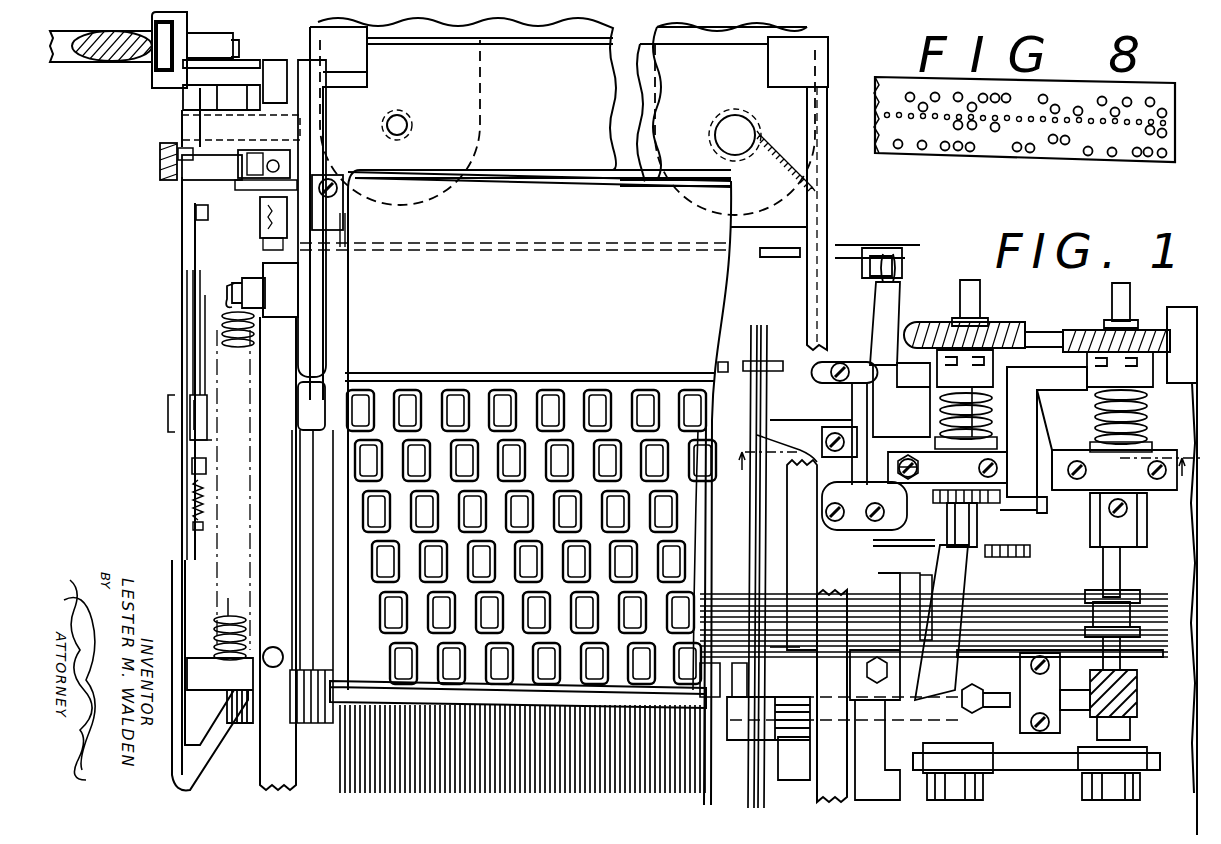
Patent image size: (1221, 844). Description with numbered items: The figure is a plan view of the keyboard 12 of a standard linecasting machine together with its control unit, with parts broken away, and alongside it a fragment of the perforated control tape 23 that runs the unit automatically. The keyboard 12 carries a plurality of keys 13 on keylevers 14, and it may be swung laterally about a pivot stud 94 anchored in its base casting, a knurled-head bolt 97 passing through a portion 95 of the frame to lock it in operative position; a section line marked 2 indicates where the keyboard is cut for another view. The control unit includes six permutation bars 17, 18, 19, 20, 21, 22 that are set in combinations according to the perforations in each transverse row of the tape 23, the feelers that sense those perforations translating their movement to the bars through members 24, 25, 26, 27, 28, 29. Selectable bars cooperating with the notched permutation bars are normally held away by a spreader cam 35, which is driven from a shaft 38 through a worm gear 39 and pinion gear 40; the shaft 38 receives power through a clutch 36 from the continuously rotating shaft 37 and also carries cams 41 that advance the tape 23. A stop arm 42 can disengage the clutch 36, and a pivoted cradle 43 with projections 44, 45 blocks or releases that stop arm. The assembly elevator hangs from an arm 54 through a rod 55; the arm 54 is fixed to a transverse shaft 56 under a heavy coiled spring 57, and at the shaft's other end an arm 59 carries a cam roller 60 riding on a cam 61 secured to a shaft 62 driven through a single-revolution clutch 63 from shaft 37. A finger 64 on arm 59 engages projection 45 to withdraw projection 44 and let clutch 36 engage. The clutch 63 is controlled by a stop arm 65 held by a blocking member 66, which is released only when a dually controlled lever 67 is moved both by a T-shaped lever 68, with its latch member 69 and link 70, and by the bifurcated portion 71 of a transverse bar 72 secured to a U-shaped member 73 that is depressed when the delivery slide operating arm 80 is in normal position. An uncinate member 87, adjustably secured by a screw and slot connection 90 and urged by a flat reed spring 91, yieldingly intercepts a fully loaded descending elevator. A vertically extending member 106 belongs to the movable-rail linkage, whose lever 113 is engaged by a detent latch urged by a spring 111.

In FIG. 1, the section line 2- 2 is at (733, 90).
In FIG. 1, the keyboard 12 is at (371, 669).
In FIG. 1, the keys 13 is at (502, 405).
In FIG. 1, the keylevers 14 is at (962, 451).
In FIG. 1, the permutation bar 17 is at (732, 600).
In FIG. 1, the permutation bar 18 is at (745, 575).
In FIG. 1, the permutation bar 19 is at (768, 600).
In FIG. 1, the permutation bar 20 is at (790, 605).
In FIG. 1, the permutation bar 21 is at (790, 620).
In FIG. 1, the permutation bar 22 is at (790, 645).
In FIG. 8, the control tape 23 is at (1121, 156).
In FIG. 1, the member 24 is at (1173, 589).
In FIG. 1, the member 25 is at (1173, 606).
In FIG. 1, the member 26 is at (1168, 620).
In FIG. 1, the member 27 is at (1168, 633).
In FIG. 1, the member 28 is at (1158, 645).
In FIG. 1, the member 29 is at (1140, 690).
In FIG. 1, the spreader cam 35 is at (985, 705).
In FIG. 1, the clutch 36 is at (1150, 380).
In FIG. 1, the continuously rotating shaft 37 is at (1040, 333).
In FIG. 1, the shaft 38 is at (1125, 567).
In FIG. 1, the worm gear 39 is at (1135, 722).
In FIG. 1, the pinion gear 40 is at (1137, 735).
In FIG. 1, the cams 41 is at (1147, 525).
In FIG. 1, the stop arm 42 is at (1080, 377).
In FIG. 1, the cradle 43 is at (1025, 423).
In FIG. 1, the projection 44 is at (1053, 383).
In FIG. 1, the projection 45 is at (1043, 512).
In FIG. 1, the arm 54 is at (180, 502).
In FIG. 1, the rod 55 is at (160, 178).
In FIG. 1, the shaft 56 is at (743, 730).
In FIG. 1, the coiled spring 57 is at (230, 612).
In FIG. 1, the arm 59 is at (950, 658).
In FIG. 1, the cam roller 60 is at (960, 575).
In FIG. 1, the cam 61 is at (1035, 553).
In FIG. 1, the shaft 62 is at (912, 516).
In FIG. 1, the clutch 63 is at (990, 347).
In FIG. 1, the finger 64 is at (985, 530).
In FIG. 1, the stop arm 65 is at (910, 345).
In FIG. 1, the blocking member 66 is at (912, 388).
In FIG. 1, the lever 67 is at (883, 330).
In FIG. 1, the T-shaped lever 68 is at (797, 428).
In FIG. 1, the latch member 69 is at (915, 508).
In FIG. 1, the link 70 is at (865, 372).
In FIG. 1, the bifurcated portion 71 is at (905, 258).
In FIG. 1, the bar 72 is at (660, 256).
In FIG. 1, the U-shaped member 73 is at (426, 234).
In FIG. 1, the delivery slide operating arm 80 is at (117, 62).
In FIG. 1, the uncinate member 87 is at (205, 168).
In FIG. 1, the screw and slot connection 90 is at (258, 220).
In FIG. 1, the flat reed spring 91 is at (240, 185).
In FIG. 1, the pivot stud 94 is at (727, 125).
In FIG. 1, the portion 95 is at (488, 22).
In FIG. 1, the bolt 97 is at (406, 120).
In FIG. 1, the vertically extending member 106 is at (195, 222).
In FIG. 1, the spring 111 is at (195, 515).
In FIG. 1, the lever 113 is at (193, 447).